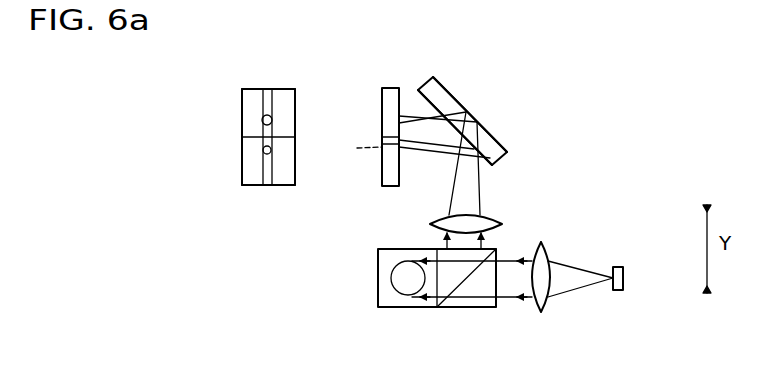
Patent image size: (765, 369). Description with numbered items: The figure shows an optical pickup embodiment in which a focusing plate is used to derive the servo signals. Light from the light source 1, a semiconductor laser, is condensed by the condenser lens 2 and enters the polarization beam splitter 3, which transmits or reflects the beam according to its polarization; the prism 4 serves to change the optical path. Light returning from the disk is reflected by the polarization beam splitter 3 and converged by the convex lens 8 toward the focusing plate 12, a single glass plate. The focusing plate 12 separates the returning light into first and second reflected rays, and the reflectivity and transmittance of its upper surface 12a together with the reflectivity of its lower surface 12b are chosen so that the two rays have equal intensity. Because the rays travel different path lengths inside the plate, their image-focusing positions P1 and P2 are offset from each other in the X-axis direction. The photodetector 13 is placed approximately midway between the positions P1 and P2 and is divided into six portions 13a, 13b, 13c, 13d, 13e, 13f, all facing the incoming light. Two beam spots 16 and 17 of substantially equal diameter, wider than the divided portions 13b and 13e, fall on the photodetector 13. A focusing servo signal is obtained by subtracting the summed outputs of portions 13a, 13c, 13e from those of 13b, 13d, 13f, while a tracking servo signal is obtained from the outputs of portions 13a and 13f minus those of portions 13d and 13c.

The light source 1 is at (623, 268).
The condenser lens 2 is at (543, 251).
The polarization beam splitter 3 is at (468, 308).
The prism 4 is at (378, 283).
The convex lens 8 is at (503, 224).
The focusing plate 12 is at (433, 77).
The upper surface of focusing plate 12a is at (486, 166).
The lower surface of focusing plate 12b is at (497, 132).
The photodetector 13 is at (383, 88).
The photodetector portion 13a is at (243, 90).
The photodetector portion 13b is at (267, 89).
The photodetector portion 13c is at (293, 91).
The photodetector portion 13d is at (251, 180).
The photodetector portion 13e is at (269, 186).
The photodetector portion 13f is at (293, 178).
The beam spot 16 is at (262, 120).
The beam spot 17 is at (263, 150).
The image-focusing position P1 is at (357, 148).
The image-focusing position P2 is at (420, 115).